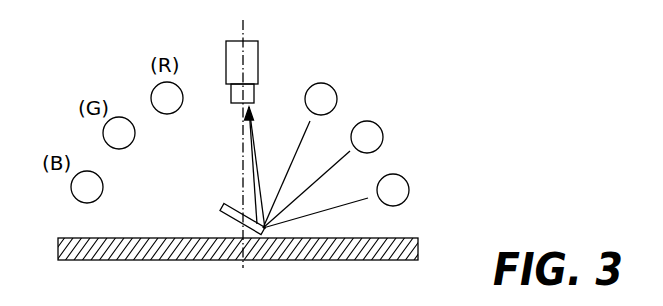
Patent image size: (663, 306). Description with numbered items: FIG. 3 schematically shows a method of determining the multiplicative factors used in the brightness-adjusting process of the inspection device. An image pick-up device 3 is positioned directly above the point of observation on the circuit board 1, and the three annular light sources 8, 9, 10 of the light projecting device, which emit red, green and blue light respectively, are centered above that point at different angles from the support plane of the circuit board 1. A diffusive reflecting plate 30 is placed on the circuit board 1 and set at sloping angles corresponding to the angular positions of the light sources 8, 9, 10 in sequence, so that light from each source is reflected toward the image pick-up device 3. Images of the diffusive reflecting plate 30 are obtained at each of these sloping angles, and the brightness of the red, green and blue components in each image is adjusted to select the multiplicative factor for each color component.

The circuit board 1 is at (408, 236).
The image pick-up device 3 is at (258, 50).
The annular light source 8 is at (337, 90).
The annular light source 9 is at (383, 133).
The annular light source 10 is at (409, 188).
The diffusive reflecting plate 30 is at (228, 206).